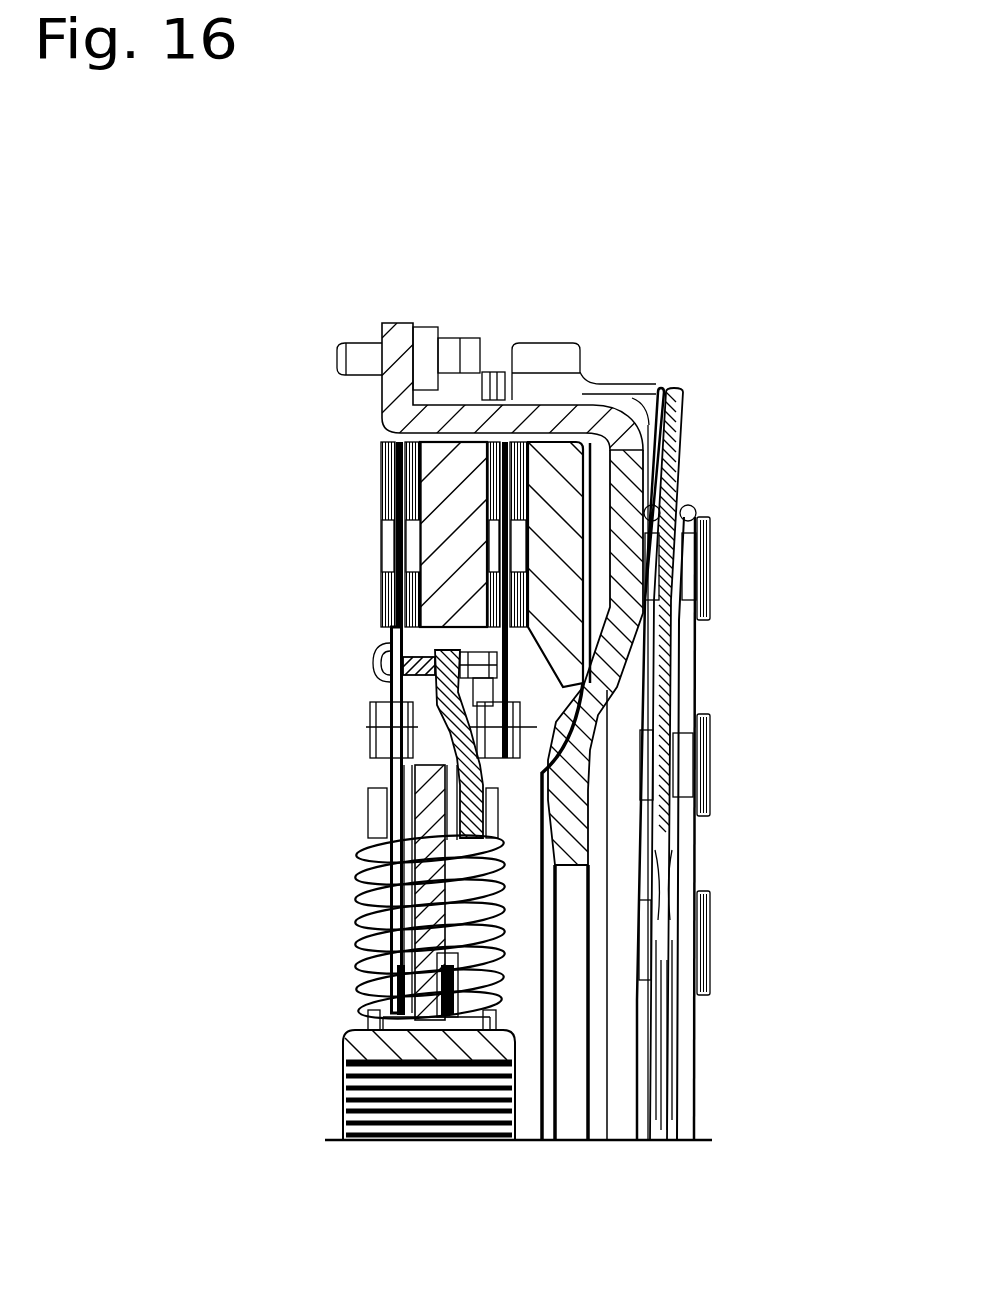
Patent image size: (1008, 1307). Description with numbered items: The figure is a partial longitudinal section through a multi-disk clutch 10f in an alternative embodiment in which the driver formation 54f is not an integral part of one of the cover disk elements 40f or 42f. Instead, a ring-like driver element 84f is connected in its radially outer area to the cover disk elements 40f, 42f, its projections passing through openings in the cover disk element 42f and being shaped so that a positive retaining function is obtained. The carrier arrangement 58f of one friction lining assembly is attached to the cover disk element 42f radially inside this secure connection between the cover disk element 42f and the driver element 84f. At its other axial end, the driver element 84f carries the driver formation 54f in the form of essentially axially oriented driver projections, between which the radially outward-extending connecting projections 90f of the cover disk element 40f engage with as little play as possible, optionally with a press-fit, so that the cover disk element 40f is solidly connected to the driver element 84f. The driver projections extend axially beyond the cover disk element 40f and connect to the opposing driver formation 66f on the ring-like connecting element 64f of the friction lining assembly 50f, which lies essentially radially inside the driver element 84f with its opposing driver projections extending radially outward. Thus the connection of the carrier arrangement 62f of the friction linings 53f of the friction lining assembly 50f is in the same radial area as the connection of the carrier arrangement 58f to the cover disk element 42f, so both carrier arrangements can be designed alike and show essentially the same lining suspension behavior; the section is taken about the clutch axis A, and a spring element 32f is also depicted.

The multi-disk clutch 10f is at (690, 256).
The friction linings 53f is at (522, 440).
The driver formation 54f is at (500, 577).
The carrier arrangement 62f is at (508, 637).
The friction lining assembly 50f is at (529, 676).
The ring-like driver element 84f is at (392, 612).
The carrier arrangement 58f is at (397, 628).
The connecting projections 90f is at (465, 631).
The opposing driver formation 66f is at (465, 711).
The connecting element 64f is at (497, 757).
The spring 32f is at (344, 895).
The cover disk element 40f is at (473, 942).
The cover disk element 42f is at (440, 935).
The axis A is at (690, 1140).